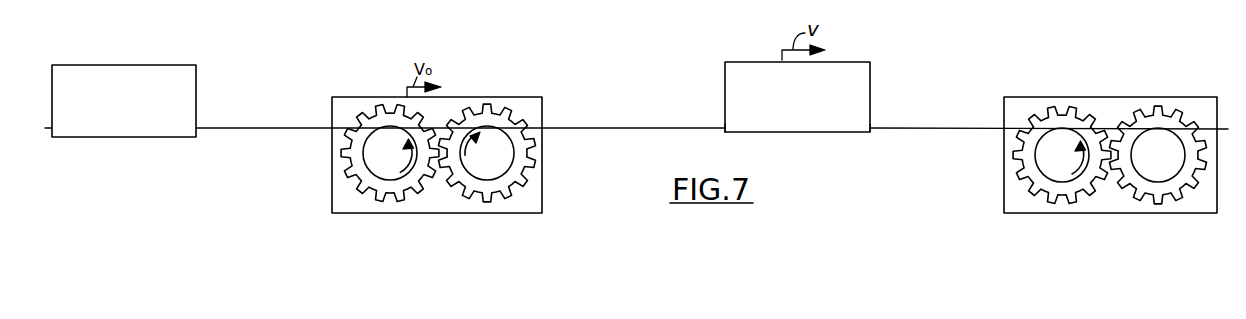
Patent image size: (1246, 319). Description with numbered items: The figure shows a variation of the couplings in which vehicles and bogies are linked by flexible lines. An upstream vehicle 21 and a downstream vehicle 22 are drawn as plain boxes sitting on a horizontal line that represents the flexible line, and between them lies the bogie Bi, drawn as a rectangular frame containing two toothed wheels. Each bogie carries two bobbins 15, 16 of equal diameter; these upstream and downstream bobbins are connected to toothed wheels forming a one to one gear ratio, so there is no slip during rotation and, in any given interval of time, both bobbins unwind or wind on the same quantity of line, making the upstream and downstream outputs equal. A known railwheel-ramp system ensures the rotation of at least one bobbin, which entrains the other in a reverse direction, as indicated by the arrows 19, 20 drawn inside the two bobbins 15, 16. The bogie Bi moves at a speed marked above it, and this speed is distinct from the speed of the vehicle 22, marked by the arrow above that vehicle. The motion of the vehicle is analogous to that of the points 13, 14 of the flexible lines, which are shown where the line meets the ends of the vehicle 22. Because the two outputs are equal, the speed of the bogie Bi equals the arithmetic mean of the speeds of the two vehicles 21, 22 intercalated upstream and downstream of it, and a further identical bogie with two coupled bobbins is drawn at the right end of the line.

The point of the flexible line 13 is at (722, 128).
The point of the flexible line 14 is at (873, 128).
The upstream bobbin 15 is at (387, 168).
The downstream bobbin 16 is at (480, 167).
The rotation arrow 19 is at (480, 138).
The rotation arrow 20 is at (404, 147).
The upstream vehicle 21 is at (145, 73).
The downstream vehicle 22 is at (792, 122).
The bogie Bi is at (527, 201).